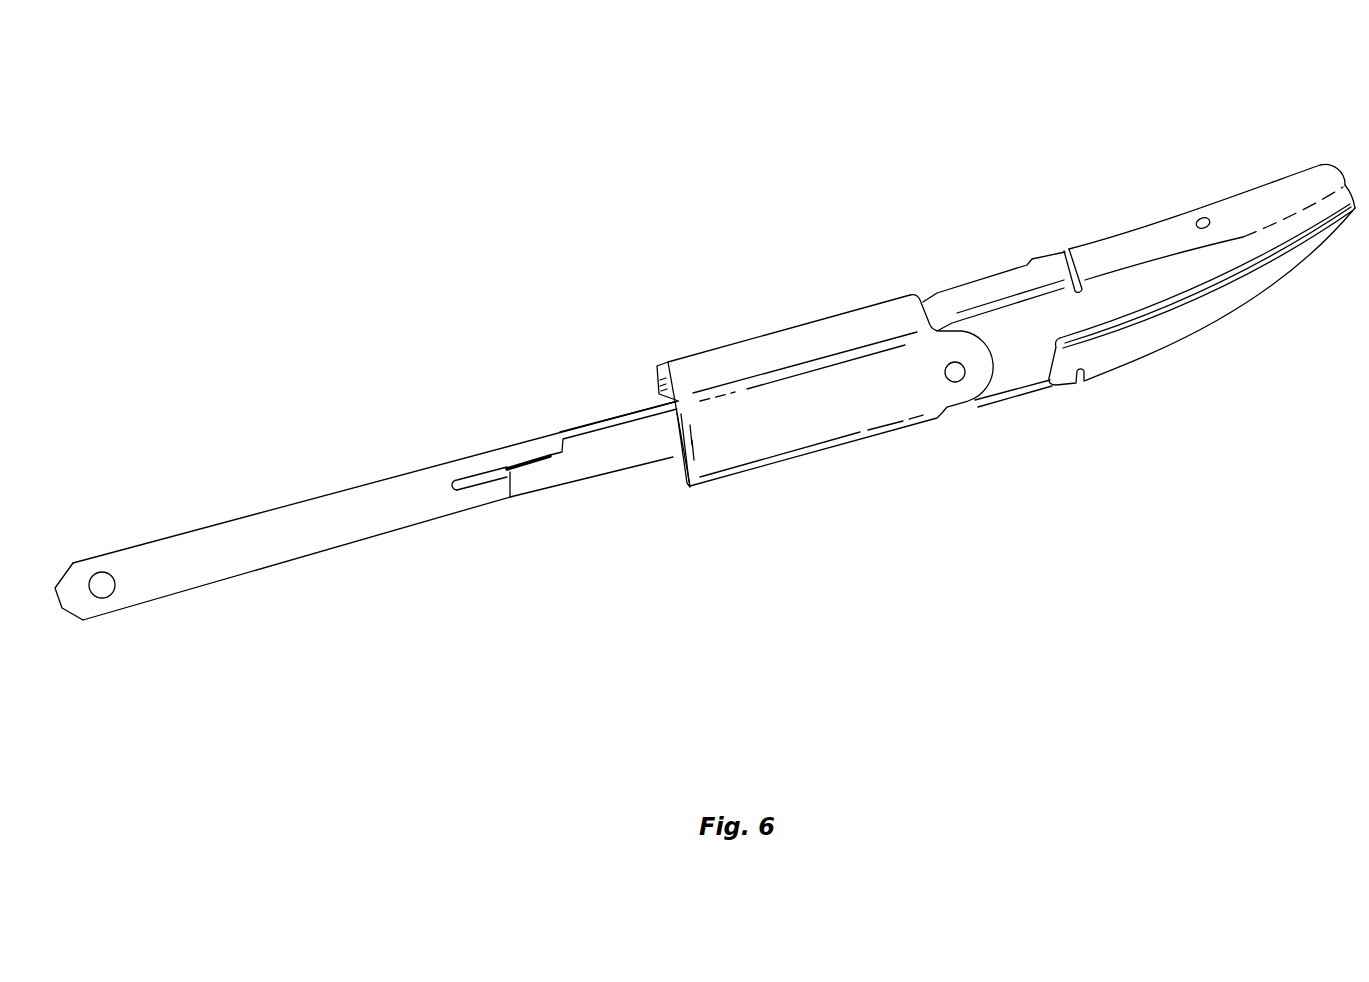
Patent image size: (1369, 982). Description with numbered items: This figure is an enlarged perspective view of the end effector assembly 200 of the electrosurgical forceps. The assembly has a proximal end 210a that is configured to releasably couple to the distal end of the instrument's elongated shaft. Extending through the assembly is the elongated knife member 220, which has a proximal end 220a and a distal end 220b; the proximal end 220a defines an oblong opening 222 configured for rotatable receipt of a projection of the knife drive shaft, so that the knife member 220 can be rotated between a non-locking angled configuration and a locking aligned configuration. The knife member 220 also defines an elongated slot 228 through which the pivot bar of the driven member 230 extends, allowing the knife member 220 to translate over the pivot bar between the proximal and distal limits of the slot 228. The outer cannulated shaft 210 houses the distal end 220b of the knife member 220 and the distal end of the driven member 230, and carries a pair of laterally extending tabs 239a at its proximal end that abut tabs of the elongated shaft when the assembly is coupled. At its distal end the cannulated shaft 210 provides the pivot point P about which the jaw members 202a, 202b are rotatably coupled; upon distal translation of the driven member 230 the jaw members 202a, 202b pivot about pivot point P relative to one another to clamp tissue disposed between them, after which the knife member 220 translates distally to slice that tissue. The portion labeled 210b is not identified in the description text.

The end effector assembly 200 is at (824, 176).
The jaw member 202a is at (1163, 232).
The jaw member 202b is at (1213, 310).
The outer cannulated shaft 210 is at (782, 347).
The proximal end of the end effector assembly 210a is at (725, 478).
The upper housing portion / arm 210b is at (886, 300).
The knife member 220 is at (334, 488).
The proximal end of knife member 220a is at (110, 615).
The distal end of knife member 220b is at (603, 415).
The oblong opening 222 is at (106, 572).
The elongated slot 228 is at (482, 475).
The driven member 230 is at (578, 463).
The tabs 239a is at (662, 361).
The pivot point P is at (958, 376).